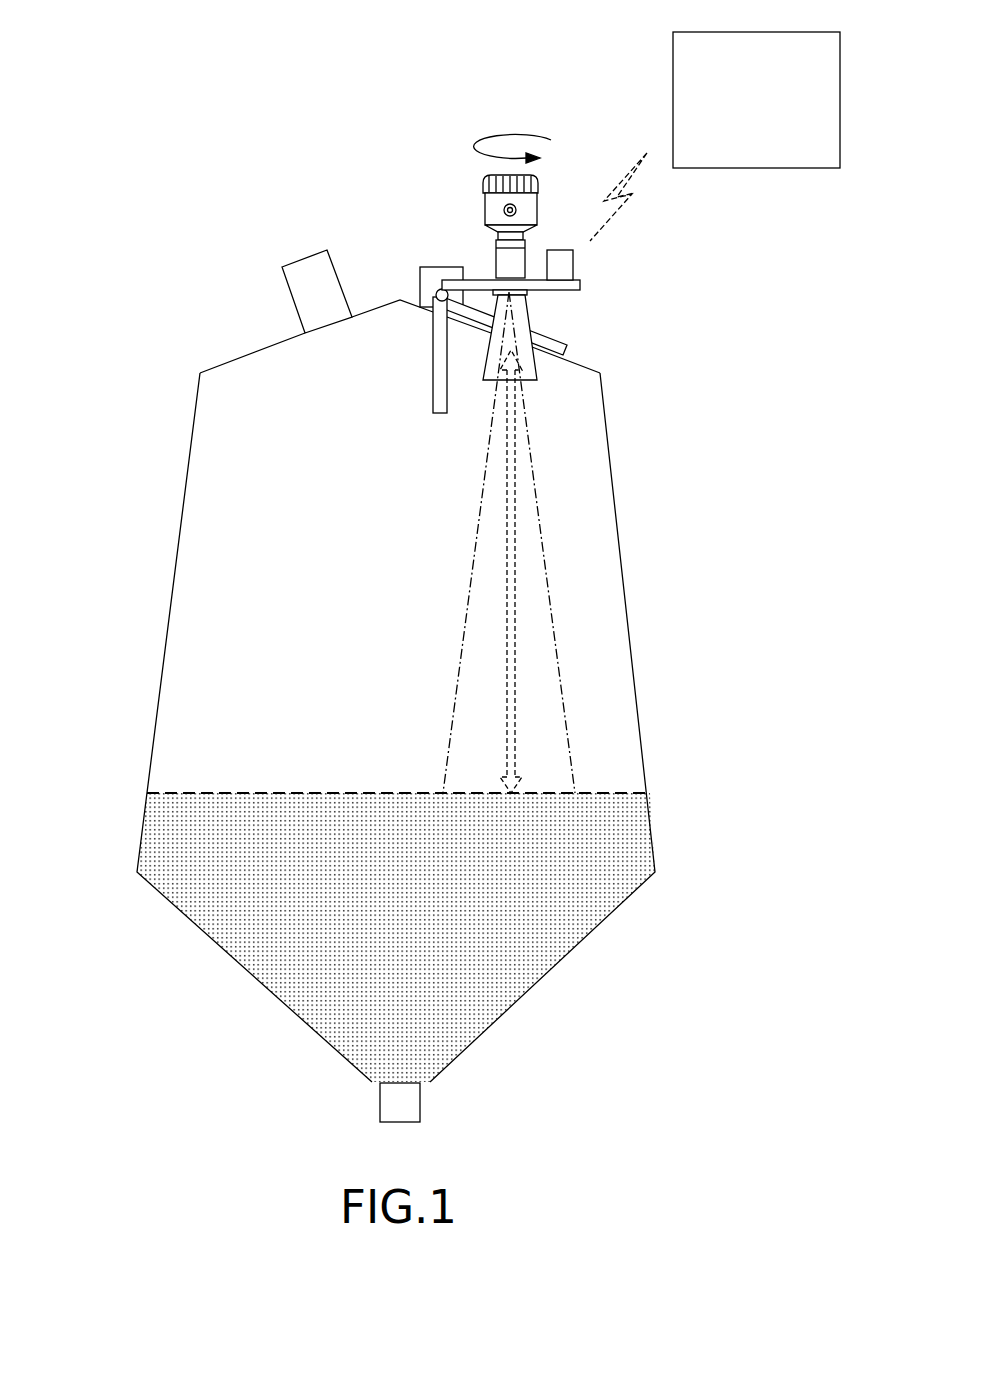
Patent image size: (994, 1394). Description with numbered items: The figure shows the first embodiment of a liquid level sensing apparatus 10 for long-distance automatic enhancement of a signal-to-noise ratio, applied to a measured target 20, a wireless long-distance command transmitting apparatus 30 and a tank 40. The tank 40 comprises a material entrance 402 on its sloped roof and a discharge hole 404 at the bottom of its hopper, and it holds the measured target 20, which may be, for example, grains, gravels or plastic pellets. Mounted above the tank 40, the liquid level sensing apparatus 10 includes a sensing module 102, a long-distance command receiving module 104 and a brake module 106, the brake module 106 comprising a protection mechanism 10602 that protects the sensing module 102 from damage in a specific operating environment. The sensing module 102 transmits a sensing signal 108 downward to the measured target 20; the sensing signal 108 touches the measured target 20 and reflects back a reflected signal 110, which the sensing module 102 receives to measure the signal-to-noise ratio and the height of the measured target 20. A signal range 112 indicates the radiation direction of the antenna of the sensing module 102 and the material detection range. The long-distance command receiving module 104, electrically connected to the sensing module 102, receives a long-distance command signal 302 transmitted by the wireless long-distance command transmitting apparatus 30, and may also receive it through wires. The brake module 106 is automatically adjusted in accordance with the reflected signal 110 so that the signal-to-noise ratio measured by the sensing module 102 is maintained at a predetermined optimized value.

The liquid level sensing apparatus 10 is at (482, 264).
The sensing module 102 is at (483, 215).
The long-distance command receiving module 104 is at (572, 263).
The brake module 106 is at (432, 318).
The protection mechanism 10602 is at (433, 364).
The sensing signal 108 is at (507, 462).
The reflected signal 110 is at (507, 683).
The signal range 112 is at (543, 542).
The measured target 20 is at (170, 838).
The wireless long-distance command transmitting apparatus 30 is at (770, 35).
The long-distance command signal 302 is at (630, 200).
The tank 40 is at (168, 620).
The material entrance 402 is at (298, 297).
The discharge hole 404 is at (410, 1105).